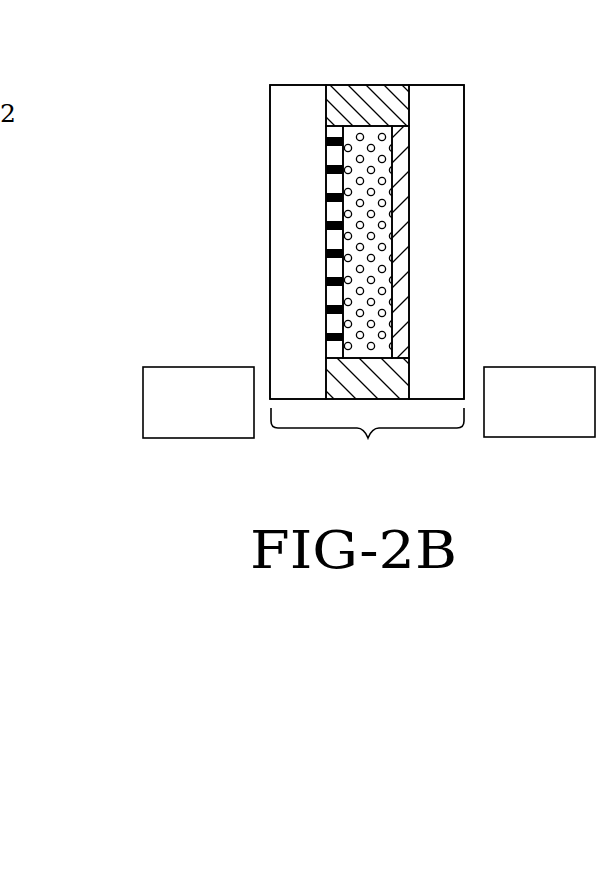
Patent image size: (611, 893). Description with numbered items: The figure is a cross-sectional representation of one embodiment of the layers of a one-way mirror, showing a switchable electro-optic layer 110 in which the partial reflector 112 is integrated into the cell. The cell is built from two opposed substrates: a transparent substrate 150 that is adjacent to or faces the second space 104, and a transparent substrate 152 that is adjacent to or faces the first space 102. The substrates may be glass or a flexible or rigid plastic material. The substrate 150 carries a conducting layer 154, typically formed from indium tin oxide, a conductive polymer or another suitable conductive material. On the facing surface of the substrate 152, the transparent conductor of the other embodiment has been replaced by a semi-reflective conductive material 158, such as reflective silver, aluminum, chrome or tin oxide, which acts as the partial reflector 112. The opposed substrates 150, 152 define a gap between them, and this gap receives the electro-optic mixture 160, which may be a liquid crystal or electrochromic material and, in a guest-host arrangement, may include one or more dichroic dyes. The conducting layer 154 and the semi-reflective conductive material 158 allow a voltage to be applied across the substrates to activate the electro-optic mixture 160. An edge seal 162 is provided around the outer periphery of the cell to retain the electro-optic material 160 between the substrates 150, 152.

The first space 102 is at (536, 367).
The second space 104 is at (202, 368).
The electro-optic layer 110 is at (366, 437).
The partial reflector 112 is at (417, 161).
The transparent substrate 150 is at (302, 105).
The transparent substrate 152 is at (433, 105).
The conducting layer 154 is at (333, 185).
The semi-reflective conductive material 158 is at (400, 213).
The electro-optic mixture 160 is at (370, 273).
The edge seal 162 is at (381, 96).